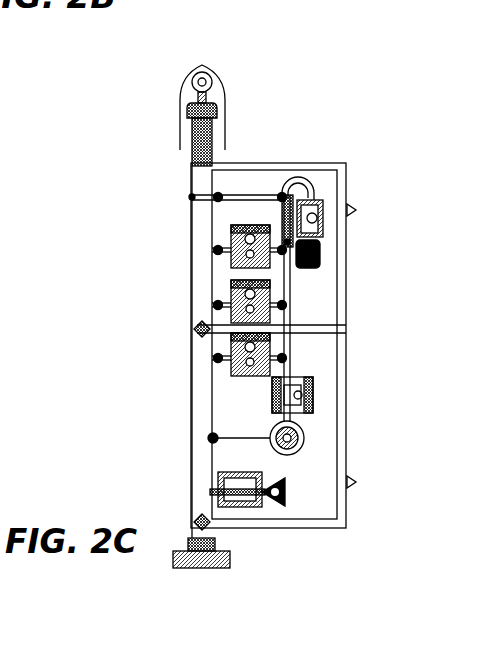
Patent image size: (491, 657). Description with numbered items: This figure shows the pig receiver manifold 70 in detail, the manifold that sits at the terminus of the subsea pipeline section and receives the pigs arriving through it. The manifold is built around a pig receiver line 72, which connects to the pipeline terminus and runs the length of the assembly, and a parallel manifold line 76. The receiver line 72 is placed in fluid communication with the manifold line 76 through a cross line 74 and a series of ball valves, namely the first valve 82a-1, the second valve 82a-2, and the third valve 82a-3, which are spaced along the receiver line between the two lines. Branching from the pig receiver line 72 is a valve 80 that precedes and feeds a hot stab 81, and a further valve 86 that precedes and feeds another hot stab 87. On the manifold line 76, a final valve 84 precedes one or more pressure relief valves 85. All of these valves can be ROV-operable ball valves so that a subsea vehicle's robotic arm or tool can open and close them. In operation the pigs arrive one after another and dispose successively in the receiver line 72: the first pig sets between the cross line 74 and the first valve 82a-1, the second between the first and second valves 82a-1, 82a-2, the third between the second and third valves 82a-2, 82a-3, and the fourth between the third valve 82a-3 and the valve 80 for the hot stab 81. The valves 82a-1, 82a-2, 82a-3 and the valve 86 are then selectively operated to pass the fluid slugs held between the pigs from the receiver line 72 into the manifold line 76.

The pig receiver manifold 70 is at (245, 78).
The pig receiver line 72 is at (191, 196).
The cross line 74 is at (257, 196).
The manifold line 76 is at (347, 323).
The valve 80 is at (252, 508).
The hot stab 81 is at (277, 508).
The first valve 82a-1 is at (218, 250).
The second valve 82a-2 is at (218, 304).
The third valve 82a-3 is at (218, 358).
The valve 84 is at (314, 202).
The pressure relief valve 85 is at (321, 262).
The valve 86 is at (313, 398).
The hot stab 87 is at (304, 440).